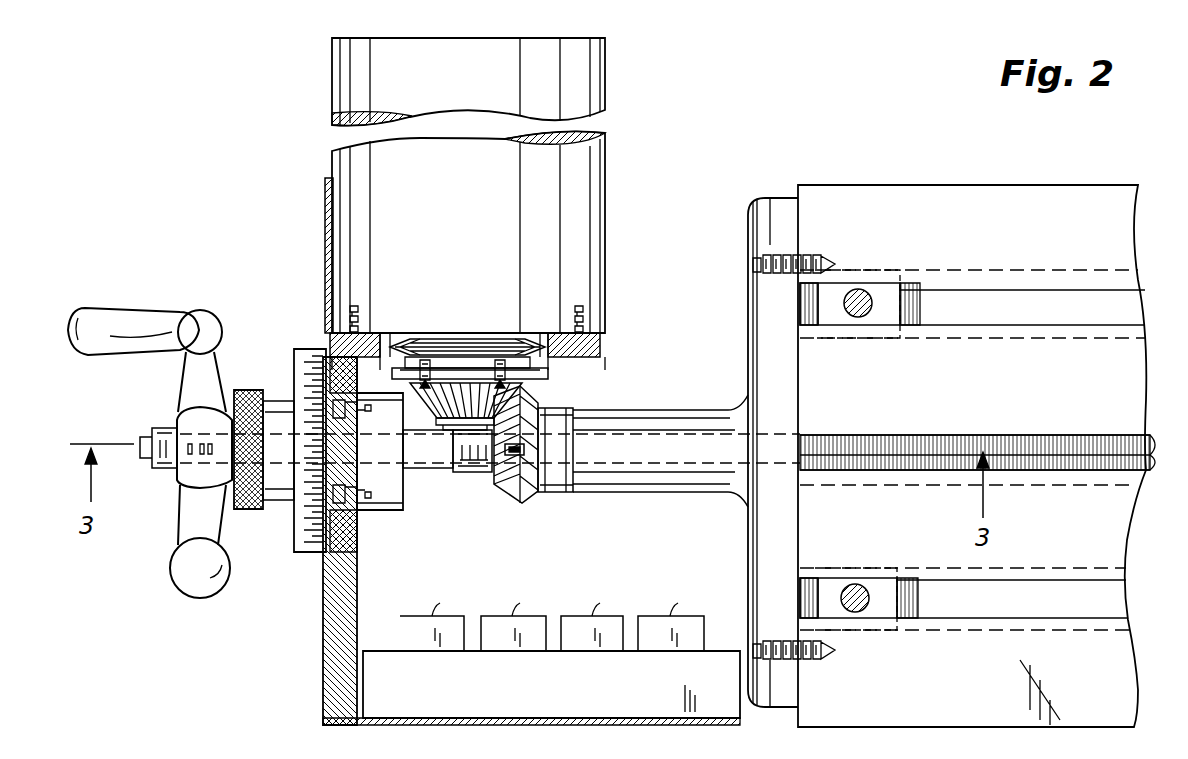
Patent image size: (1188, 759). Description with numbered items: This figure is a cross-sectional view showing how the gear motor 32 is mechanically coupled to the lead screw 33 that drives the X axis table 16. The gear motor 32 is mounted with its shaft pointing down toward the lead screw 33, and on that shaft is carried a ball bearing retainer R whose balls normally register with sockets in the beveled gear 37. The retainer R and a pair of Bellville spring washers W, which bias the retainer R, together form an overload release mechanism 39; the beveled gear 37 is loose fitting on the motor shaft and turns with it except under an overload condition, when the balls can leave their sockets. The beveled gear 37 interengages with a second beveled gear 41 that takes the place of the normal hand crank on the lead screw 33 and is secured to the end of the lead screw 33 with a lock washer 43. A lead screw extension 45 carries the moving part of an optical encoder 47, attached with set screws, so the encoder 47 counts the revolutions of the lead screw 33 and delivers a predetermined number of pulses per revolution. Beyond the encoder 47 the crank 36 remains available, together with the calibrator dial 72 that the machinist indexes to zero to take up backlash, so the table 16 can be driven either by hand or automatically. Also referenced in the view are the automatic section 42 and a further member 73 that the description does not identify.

The X axis table 16 is at (1118, 237).
The gear motor 32 is at (345, 92).
The lead screw 33 is at (1146, 478).
The crank 36 is at (197, 318).
The beveled gear 37 is at (555, 410).
The overload release mechanism 39 is at (505, 345).
The second beveled gear 41 is at (510, 500).
The automatic section 42 is at (618, 611).
The lock washer 43 is at (500, 472).
The lead screw extension 45 is at (436, 470).
The optical encoder 47 is at (388, 512).
The calibrator dial 72 is at (296, 347).
The plate 73 is at (322, 612).
The Bellville spring washers W is at (485, 345).
The ball bearing retainer R is at (540, 372).